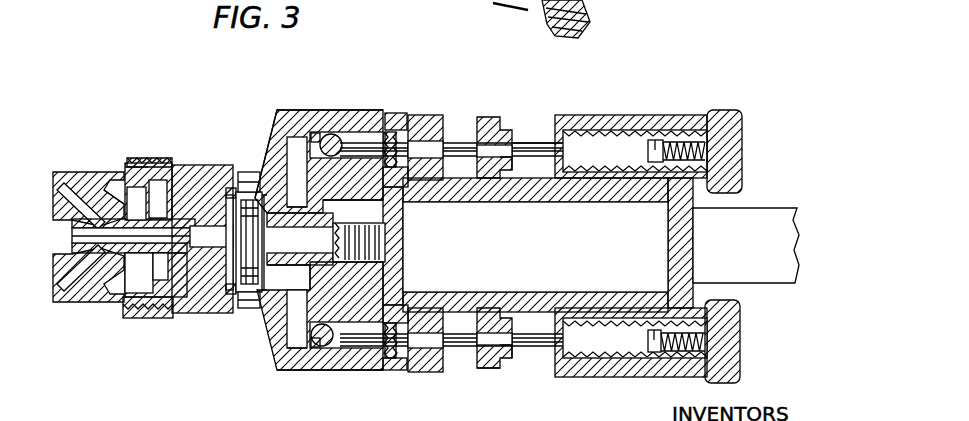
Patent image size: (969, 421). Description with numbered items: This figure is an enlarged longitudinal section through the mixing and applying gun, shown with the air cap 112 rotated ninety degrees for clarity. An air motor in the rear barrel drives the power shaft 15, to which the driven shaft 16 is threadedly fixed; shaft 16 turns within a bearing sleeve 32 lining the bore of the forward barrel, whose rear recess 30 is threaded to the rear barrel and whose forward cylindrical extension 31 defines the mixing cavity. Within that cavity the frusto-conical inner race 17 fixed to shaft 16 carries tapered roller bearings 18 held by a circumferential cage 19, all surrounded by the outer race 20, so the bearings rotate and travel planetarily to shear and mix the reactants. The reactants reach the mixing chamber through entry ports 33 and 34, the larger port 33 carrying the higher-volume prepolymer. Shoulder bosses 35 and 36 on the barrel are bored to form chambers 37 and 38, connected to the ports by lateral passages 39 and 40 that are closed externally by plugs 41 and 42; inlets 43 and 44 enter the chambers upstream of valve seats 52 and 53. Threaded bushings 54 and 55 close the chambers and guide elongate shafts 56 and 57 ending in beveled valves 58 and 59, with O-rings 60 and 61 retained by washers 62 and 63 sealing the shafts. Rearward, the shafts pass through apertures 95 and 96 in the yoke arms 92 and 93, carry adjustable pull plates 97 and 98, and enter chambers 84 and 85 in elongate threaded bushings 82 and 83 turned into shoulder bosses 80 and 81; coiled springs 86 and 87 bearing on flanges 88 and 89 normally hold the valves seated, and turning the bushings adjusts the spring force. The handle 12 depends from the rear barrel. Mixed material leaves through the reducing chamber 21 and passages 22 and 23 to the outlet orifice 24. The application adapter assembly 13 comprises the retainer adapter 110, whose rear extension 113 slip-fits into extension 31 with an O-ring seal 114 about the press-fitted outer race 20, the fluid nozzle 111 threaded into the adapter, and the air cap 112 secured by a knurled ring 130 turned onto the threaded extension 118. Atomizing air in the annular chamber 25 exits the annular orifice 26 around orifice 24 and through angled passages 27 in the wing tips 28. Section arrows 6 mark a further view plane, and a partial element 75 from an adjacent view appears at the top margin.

The seal ring 6 is at (226, 195).
The pistol grip type handle 12 is at (746, 245).
The application adapter assembly 13 is at (156, 153).
The power shaft 15 is at (393, 242).
The driven shaft 16 is at (342, 242).
The frusto-conical inner race 17 is at (258, 230).
The tapered roller bearings 18 is at (250, 242).
The circumferential cage 19 is at (258, 252).
The outer race 20 is at (247, 180).
The reducing chamber 21 is at (211, 242).
The passage 22 is at (200, 236).
The passage 23 is at (118, 240).
The outlet orifice 24 is at (72, 237).
The annular chamber 25 is at (112, 206).
The annular orifice 26 is at (72, 222).
The passages 27 is at (62, 200).
The wing tips 28 is at (73, 174).
The recess 30 is at (353, 210).
The cylindrical extension 31 is at (240, 170).
The bearing sleeve 32 is at (300, 314).
The mixing chamber entry port 33 is at (288, 274).
The mixing chamber entry port 34 is at (301, 190).
The longitudinal shoulder boss 35 is at (357, 370).
The longitudinal shoulder boss 36 is at (358, 110).
The chamber 37 is at (377, 353).
The chamber 38 is at (370, 137).
The laterally extending passage 39 is at (300, 327).
The laterally extending passage 40 is at (300, 172).
The plug 41 is at (273, 377).
The plug 42 is at (282, 107).
The inlet 43 is at (338, 347).
The inlet 44 is at (340, 142).
The valve seat 52 is at (318, 348).
The valve seat 53 is at (322, 134).
The threaded bushing 54 is at (437, 367).
The threaded bushing 55 is at (437, 117).
The elongate shaft 56 is at (542, 331).
The elongate shaft 57 is at (540, 150).
The valve 58 is at (320, 330).
The valve 59 is at (315, 132).
The O-ring 60 is at (395, 375).
The O-ring 61 is at (398, 118).
The washer 62 is at (386, 367).
The washer 63 is at (390, 112).
The threaded bolt 75 is at (585, 13).
The shoulder boss 80 is at (590, 373).
The shoulder boss 81 is at (583, 118).
The elongate threaded bushing 82 is at (618, 360).
The elongate threaded bushing 83 is at (675, 137).
The chamber 84 is at (637, 350).
The chamber 85 is at (615, 143).
The coiled spring 86 is at (703, 337).
The coiled spring 87 is at (697, 115).
The spring engaging flange 88 is at (652, 330).
The spring engaging flange 89 is at (657, 142).
The arm 92 is at (485, 370).
The arm 93 is at (488, 118).
The aperture 95 is at (479, 338).
The aperture 96 is at (490, 143).
The annular pull plate 97 is at (507, 353).
The annular pull plate 98 is at (512, 160).
The retainer adapter 110 is at (185, 313).
The fluid nozzle 111 is at (141, 218).
The air cap 112 is at (122, 167).
The cylindrical extension 113 is at (238, 300).
The O-ring seal 114 is at (265, 175).
The externally threaded forward extension 118 is at (150, 167).
The internally threaded knurled ring 130 is at (137, 171).